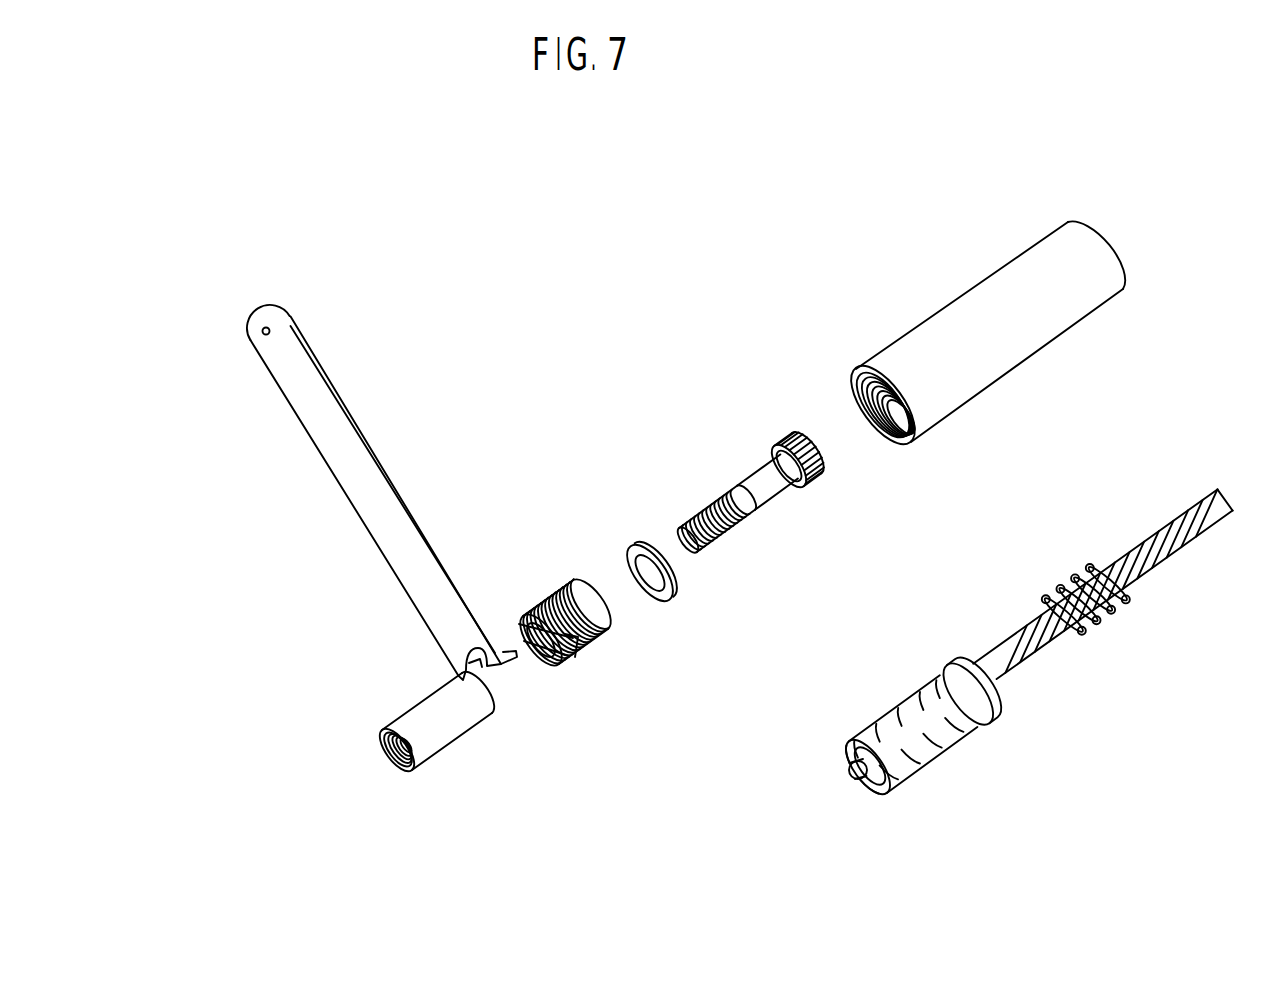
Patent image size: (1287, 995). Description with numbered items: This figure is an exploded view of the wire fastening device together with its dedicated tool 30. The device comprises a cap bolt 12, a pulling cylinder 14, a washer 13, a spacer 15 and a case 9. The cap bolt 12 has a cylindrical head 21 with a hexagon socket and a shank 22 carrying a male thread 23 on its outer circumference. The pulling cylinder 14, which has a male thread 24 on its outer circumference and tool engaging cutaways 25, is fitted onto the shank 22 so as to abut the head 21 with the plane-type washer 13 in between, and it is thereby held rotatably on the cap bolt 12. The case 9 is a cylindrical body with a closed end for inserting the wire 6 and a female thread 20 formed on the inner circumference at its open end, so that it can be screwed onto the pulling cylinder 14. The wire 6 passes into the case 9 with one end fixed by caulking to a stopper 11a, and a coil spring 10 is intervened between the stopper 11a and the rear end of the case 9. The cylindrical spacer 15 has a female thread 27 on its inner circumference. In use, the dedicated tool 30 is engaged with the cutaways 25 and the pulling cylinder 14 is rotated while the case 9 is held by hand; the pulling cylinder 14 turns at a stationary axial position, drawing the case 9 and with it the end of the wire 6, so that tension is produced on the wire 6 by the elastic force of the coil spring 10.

The wire 6 is at (1158, 534).
The case 9 is at (983, 275).
The coil spring 10 is at (1120, 616).
The stopper 11a is at (958, 746).
The cap bolt 12 is at (740, 475).
The washer 13 is at (676, 610).
The pulling cylinder 14 is at (608, 679).
The spacer 15 is at (453, 769).
The female thread 20 is at (863, 430).
The head 21 is at (795, 440).
The shank 22 is at (712, 567).
The male thread 23 is at (707, 503).
The male thread 24 is at (560, 580).
The tool engaging cutaways 25 is at (520, 652).
The female thread 27 is at (382, 752).
The dedicated tool 30 is at (323, 360).